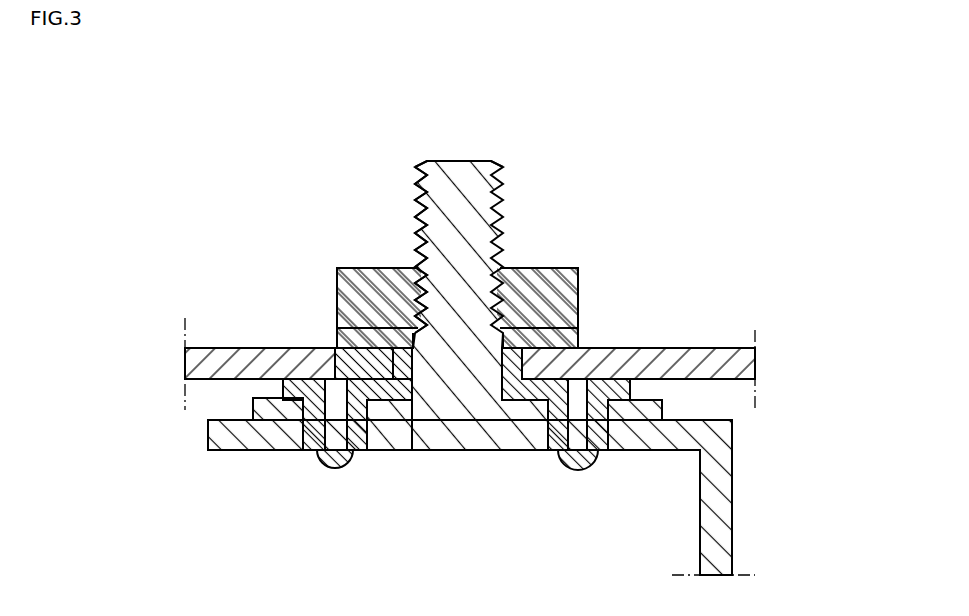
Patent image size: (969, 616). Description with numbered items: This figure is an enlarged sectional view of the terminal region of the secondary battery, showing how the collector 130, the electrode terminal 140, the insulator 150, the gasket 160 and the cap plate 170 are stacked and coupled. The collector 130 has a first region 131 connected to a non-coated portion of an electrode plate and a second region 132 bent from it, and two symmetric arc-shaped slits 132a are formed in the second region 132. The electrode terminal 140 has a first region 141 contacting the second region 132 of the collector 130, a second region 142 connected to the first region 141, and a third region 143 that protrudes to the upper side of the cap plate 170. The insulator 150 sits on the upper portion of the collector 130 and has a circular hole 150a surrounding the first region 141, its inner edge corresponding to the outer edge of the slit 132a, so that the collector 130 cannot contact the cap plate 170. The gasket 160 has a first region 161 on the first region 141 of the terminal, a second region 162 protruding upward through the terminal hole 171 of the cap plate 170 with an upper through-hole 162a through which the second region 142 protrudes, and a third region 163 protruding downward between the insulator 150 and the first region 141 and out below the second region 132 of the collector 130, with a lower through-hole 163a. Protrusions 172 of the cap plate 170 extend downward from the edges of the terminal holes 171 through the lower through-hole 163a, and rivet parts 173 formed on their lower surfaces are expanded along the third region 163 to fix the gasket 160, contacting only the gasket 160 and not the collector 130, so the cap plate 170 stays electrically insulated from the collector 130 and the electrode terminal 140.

The collector 130 is at (512, 486).
The first region of the collector 131 is at (723, 528).
The second region of the collector 132 is at (668, 452).
The slit 132a is at (608, 452).
The electrode terminal 140 is at (505, 261).
The first region of the electrode terminal 141 is at (560, 350).
The second region of the electrode terminal 142 is at (462, 372).
The third region of the electrode terminal 143 is at (475, 182).
The insulator 150 is at (670, 355).
The circular hole 150a is at (625, 400).
The gasket 160 is at (320, 349).
The first region of the gasket 161 is at (295, 378).
The second region of the gasket 162 is at (359, 257).
The upper through-hole 162a is at (413, 355).
The third region of the gasket 163 is at (329, 459).
The lower through-hole 163a is at (334, 432).
The cap plate 170 is at (745, 370).
The terminal hole 171 is at (495, 392).
The protrusion 172 is at (560, 350).
The rivet part 173 is at (575, 458).